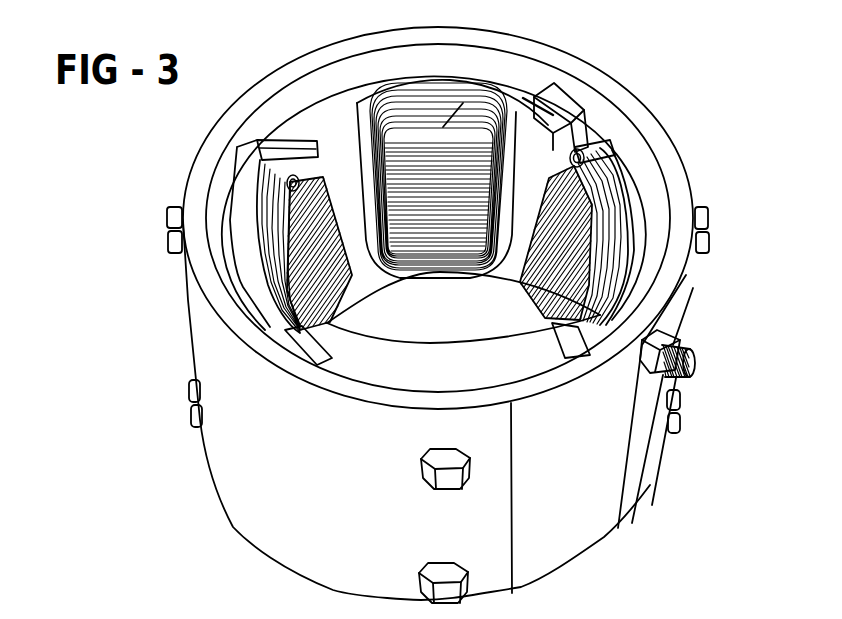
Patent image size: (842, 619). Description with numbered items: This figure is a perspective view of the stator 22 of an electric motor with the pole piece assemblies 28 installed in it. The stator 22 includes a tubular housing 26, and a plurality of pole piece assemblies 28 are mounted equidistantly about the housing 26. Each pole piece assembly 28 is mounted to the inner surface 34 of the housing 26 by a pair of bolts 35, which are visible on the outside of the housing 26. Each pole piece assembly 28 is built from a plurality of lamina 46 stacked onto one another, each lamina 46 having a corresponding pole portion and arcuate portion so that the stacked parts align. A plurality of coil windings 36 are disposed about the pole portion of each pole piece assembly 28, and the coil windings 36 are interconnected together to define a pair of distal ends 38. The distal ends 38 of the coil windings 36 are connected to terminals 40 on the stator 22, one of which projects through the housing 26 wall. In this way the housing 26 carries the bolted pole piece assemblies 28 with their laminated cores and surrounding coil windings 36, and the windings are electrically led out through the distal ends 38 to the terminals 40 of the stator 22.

The stator 22 is at (581, 550).
The tubular housing 26 is at (654, 140).
The pole piece assemblies 28 is at (343, 207).
The inner surface 34 is at (453, 60).
The bolts 35 is at (681, 407).
The coil windings 36 is at (393, 92).
The distal ends 38 is at (538, 127).
The terminals 40 is at (694, 373).
The lamina 46 is at (441, 133).